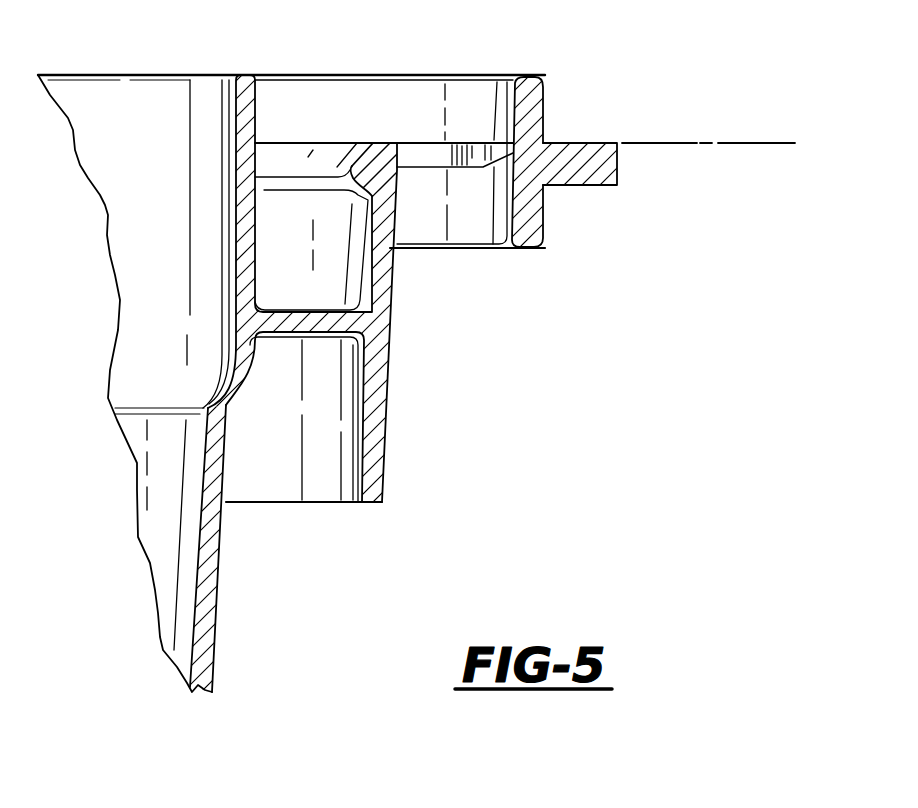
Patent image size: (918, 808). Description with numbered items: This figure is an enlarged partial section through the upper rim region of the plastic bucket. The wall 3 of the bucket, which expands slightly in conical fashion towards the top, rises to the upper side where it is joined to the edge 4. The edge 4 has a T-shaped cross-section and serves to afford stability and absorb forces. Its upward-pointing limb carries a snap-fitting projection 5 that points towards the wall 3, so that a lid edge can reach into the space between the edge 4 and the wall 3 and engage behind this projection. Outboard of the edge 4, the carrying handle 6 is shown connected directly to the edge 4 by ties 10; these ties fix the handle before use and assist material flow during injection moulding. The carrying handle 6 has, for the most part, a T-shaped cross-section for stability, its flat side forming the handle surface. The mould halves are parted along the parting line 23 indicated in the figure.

The wall 3 is at (215, 552).
The edge 4 is at (375, 407).
The snap-fitting projection 5 is at (365, 172).
The carrying handle 6 is at (583, 163).
The ties 10 is at (487, 150).
The parting line 23 is at (742, 136).